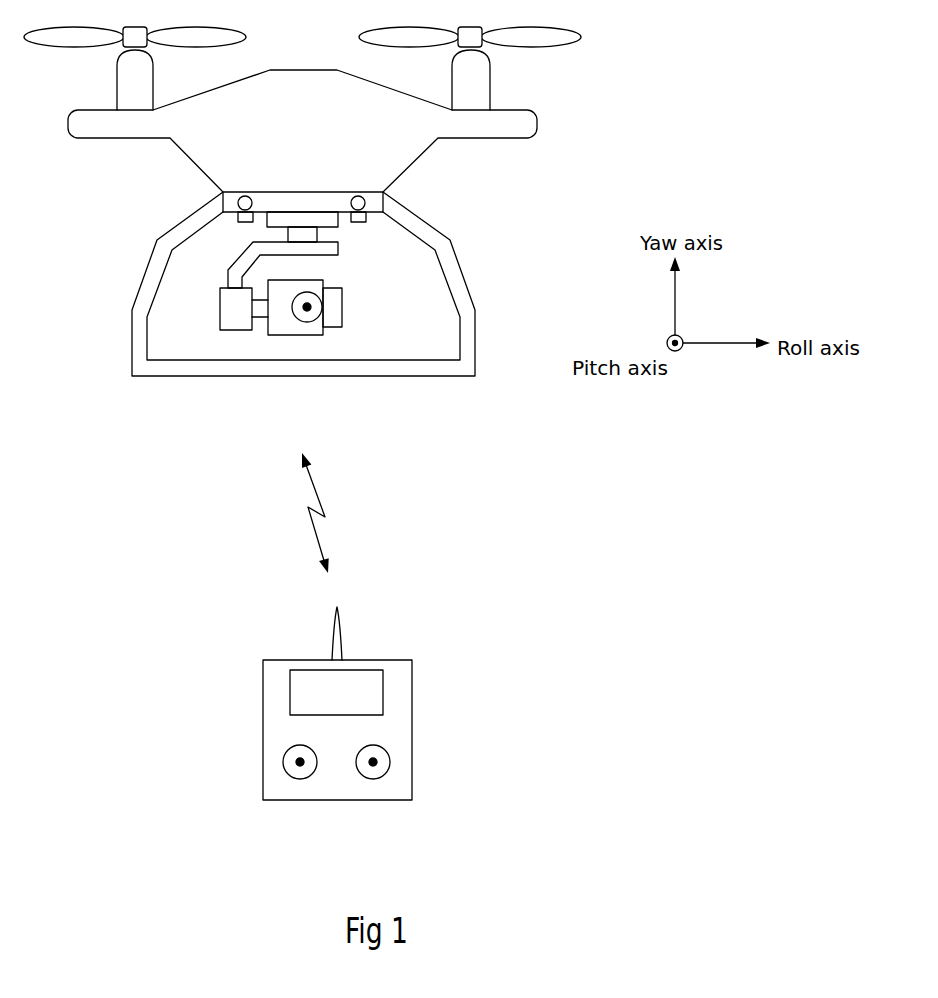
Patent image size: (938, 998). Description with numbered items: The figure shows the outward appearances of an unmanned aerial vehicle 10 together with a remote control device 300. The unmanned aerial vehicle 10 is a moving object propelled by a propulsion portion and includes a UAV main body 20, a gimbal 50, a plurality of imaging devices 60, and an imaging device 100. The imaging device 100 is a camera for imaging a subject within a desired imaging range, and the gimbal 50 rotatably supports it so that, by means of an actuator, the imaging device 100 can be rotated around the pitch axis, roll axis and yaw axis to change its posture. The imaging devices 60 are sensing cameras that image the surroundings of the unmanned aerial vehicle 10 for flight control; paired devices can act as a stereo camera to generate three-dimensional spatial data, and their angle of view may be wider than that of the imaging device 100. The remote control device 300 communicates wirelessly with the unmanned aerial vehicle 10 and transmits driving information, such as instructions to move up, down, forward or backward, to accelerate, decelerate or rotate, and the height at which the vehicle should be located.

The unmanned aerial vehicle 10 is at (621, 102).
The UAV main body 20 is at (304, 69).
The gimbal 50 is at (238, 260).
The imaging devices 60 is at (240, 226).
The imaging device 100 is at (297, 338).
The remote control device 300 is at (413, 730).